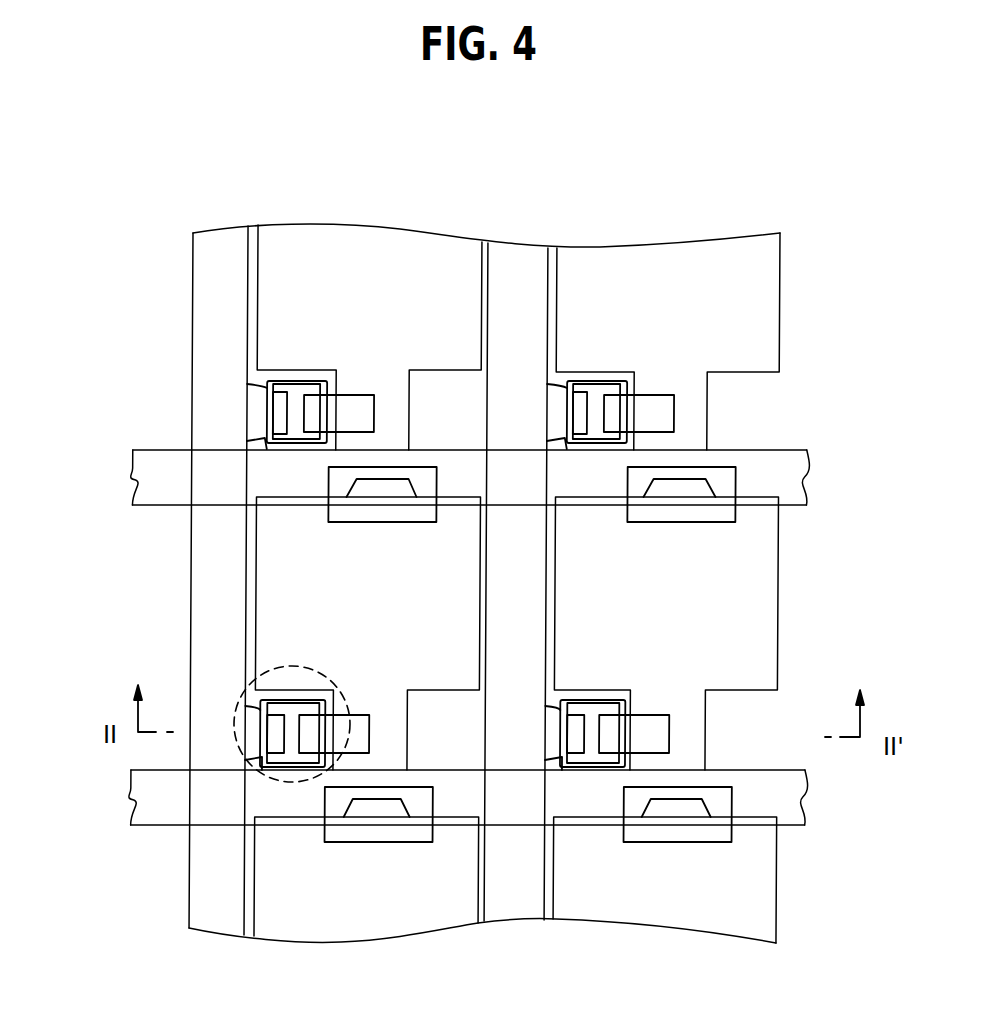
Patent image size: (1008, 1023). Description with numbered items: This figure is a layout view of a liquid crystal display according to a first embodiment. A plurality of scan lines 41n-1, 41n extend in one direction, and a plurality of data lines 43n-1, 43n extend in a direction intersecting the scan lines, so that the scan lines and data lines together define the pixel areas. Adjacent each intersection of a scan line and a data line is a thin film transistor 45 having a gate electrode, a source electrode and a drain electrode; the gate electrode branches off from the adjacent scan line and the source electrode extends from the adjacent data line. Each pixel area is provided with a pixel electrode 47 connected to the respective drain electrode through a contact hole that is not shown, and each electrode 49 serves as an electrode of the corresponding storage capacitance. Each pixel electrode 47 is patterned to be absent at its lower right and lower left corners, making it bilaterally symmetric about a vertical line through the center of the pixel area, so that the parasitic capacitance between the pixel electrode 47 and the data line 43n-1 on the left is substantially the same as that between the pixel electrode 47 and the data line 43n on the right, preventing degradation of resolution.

The scan line 41n-1 is at (153, 477).
The scan line 41n is at (140, 795).
The data line 43n-1 is at (216, 918).
The data line 43n is at (514, 916).
The thin film transistor 45 is at (275, 668).
The pixel electrode 47 is at (272, 553).
The electrode 49 is at (305, 478).